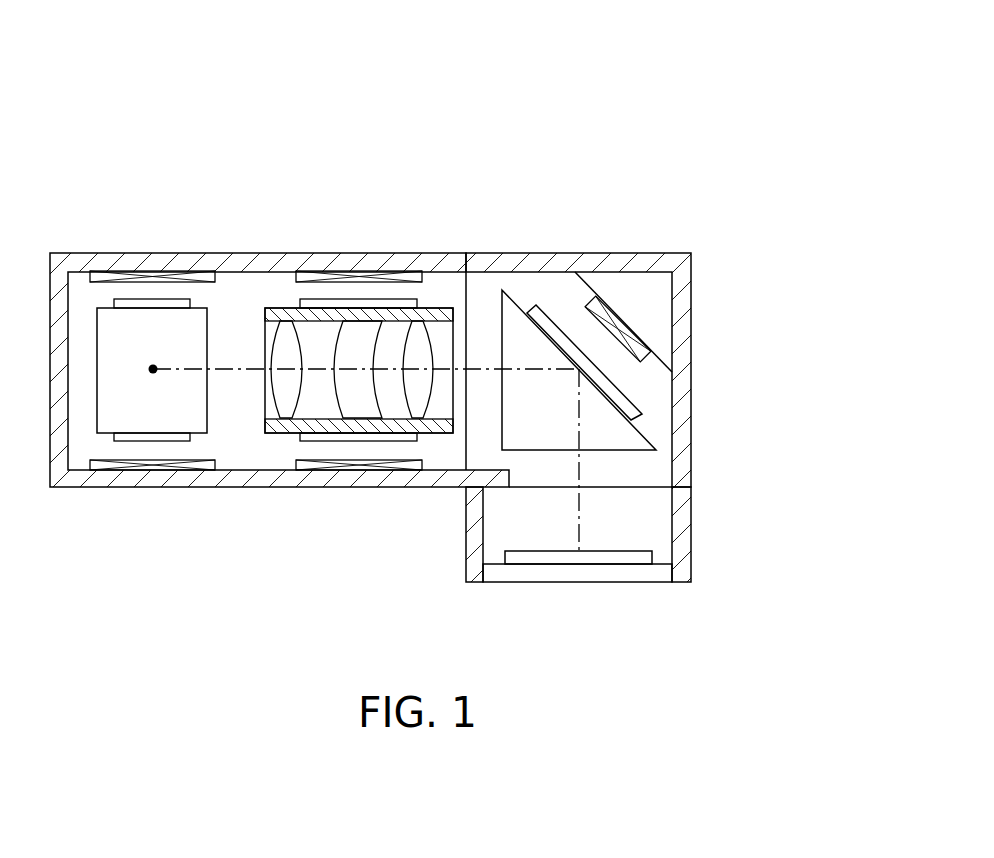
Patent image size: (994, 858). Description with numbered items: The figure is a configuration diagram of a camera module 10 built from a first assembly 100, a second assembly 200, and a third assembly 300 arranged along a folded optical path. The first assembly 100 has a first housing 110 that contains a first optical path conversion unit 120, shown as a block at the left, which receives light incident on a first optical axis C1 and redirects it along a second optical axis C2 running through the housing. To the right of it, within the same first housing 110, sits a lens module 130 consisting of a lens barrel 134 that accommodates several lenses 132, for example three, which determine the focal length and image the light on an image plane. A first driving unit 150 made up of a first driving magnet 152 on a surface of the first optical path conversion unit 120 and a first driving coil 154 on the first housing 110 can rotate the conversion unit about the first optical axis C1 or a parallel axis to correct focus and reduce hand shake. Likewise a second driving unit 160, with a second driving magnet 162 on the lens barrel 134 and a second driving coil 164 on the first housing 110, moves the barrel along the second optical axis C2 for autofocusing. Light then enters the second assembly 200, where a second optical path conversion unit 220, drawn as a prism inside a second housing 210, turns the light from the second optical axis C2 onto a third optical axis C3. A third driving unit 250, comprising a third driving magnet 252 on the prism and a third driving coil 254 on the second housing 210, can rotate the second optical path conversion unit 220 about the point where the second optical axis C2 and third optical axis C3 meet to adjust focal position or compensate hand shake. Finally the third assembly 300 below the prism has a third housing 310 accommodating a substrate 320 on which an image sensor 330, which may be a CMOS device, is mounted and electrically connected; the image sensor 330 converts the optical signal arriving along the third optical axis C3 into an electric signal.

The camera module 10 is at (537, 98).
The first assembly 100 is at (290, 235).
The first housing 110 is at (113, 258).
The first optical path conversion unit 120 is at (197, 303).
The lens module 130 is at (343, 196).
The lens 132 is at (420, 338).
The lens barrel 134 is at (333, 312).
The first driving unit 150 is at (159, 431).
The first driving magnet 152 is at (125, 441).
The first driving coil 154 is at (122, 543).
The second driving unit 160 is at (359, 431).
The second driving magnet 162 is at (320, 441).
The second driving coil 164 is at (317, 543).
The second assembly 200 is at (616, 235).
The second housing 210 is at (680, 300).
The second optical path conversion unit 220 is at (510, 322).
The third driving unit 250 is at (672, 346).
The third driving magnet 252 is at (618, 402).
The third driving coil 254 is at (640, 350).
The third assembly 300 is at (712, 547).
The third housing 310 is at (682, 570).
The substrate 320 is at (535, 573).
The image sensor 330 is at (624, 555).
The first optical axis C1 is at (141, 384).
The second optical axis C2 is at (242, 369).
The third optical axis C3 is at (579, 522).